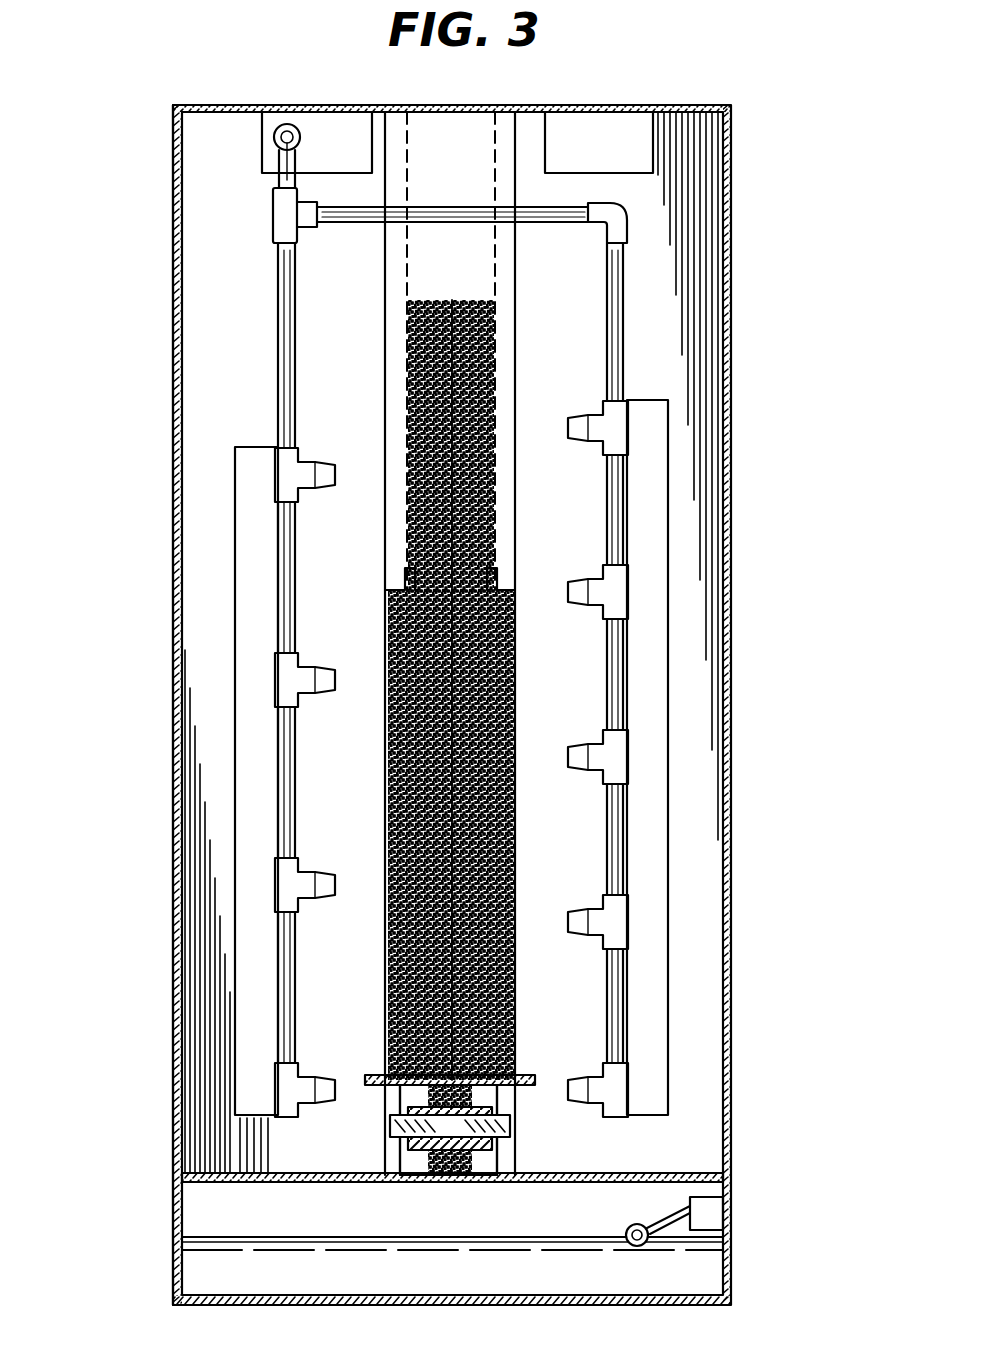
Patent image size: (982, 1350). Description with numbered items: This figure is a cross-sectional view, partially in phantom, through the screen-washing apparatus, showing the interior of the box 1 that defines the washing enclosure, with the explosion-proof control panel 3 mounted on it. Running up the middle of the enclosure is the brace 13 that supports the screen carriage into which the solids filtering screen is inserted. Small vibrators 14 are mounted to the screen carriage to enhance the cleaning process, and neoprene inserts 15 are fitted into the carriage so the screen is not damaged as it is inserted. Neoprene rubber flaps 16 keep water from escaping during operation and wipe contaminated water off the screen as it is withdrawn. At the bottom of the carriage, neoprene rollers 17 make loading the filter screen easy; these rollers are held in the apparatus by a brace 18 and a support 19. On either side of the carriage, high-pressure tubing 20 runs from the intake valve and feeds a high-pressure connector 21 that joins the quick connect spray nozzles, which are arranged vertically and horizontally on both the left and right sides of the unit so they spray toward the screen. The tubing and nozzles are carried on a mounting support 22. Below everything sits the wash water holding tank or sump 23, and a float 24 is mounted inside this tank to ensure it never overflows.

The box 1 is at (172, 492).
The explosion-proof control panel 3 is at (727, 462).
The brace 13 is at (510, 322).
The vibrators 14 is at (262, 145).
The neoprene inserts 15 is at (405, 572).
The neoprene rubber flaps 16 is at (470, 770).
The neoprene rollers 17 is at (430, 1088).
The brace 18 is at (535, 1148).
The support 19 is at (400, 1155).
The high-pressure tubing 20 is at (625, 280).
The high-pressure connector 21 is at (625, 593).
The mounting support 22 is at (668, 852).
The wash water holding tank or sump 23 is at (212, 1210).
The float 24 is at (648, 1242).